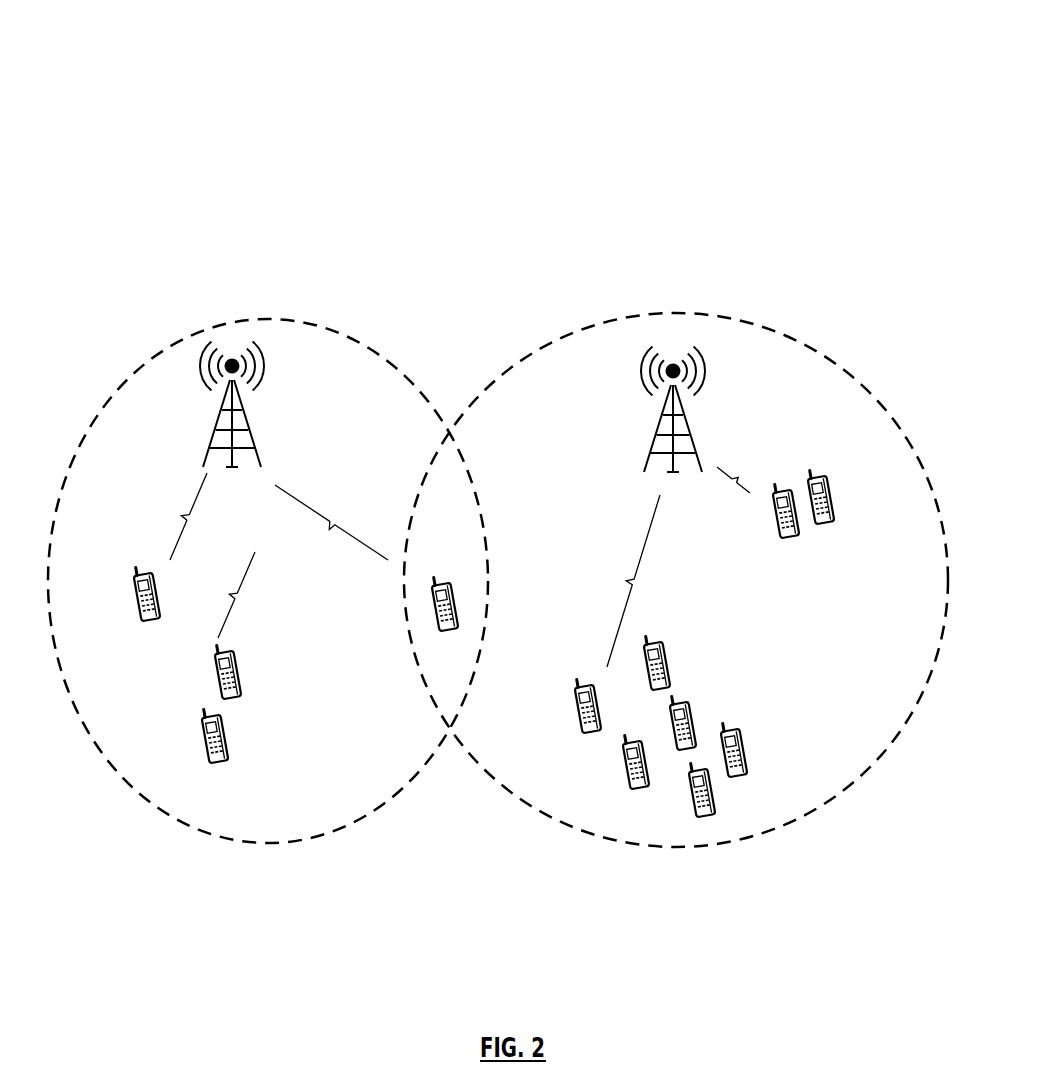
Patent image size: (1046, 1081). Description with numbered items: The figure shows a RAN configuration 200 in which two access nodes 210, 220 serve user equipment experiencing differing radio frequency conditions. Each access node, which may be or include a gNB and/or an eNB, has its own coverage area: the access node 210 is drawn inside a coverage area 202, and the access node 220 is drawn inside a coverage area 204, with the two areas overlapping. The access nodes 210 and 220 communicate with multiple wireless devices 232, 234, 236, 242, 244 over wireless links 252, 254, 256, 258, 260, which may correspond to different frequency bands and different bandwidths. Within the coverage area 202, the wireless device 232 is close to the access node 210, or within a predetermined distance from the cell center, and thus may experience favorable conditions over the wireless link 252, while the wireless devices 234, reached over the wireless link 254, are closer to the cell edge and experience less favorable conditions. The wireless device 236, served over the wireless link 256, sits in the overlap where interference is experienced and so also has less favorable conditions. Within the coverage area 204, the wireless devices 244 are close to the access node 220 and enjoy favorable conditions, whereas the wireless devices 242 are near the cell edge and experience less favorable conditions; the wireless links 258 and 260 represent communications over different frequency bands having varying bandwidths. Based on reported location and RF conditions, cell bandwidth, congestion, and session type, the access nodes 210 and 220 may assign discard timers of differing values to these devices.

The RAN configuration 200 is at (486, 72).
The coverage area 202 is at (292, 290).
The coverage area 204 is at (702, 283).
The access node 210 is at (265, 410).
The access node 220 is at (725, 402).
The wireless device 232 is at (148, 626).
The wireless devices 234 is at (215, 763).
The wireless device 236 is at (450, 632).
The wireless devices 242 is at (620, 753).
The wireless devices 244 is at (813, 530).
The wireless link 252 is at (183, 488).
The wireless link 254 is at (243, 587).
The wireless link 256 is at (300, 493).
The wireless link 258 is at (628, 547).
The wireless link 260 is at (710, 460).